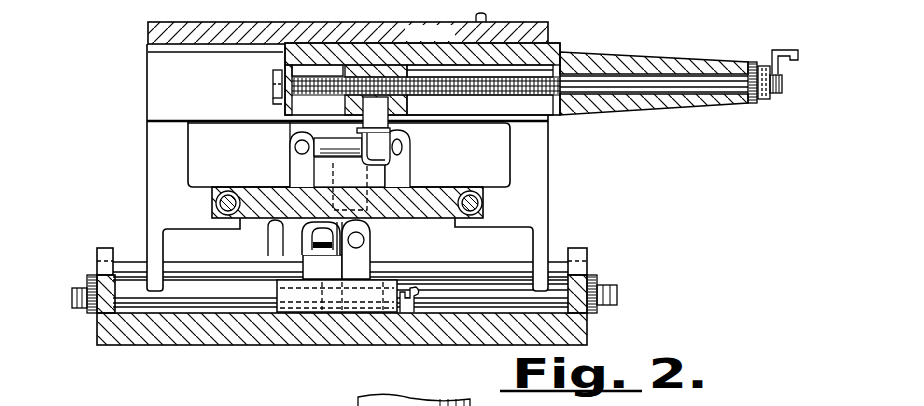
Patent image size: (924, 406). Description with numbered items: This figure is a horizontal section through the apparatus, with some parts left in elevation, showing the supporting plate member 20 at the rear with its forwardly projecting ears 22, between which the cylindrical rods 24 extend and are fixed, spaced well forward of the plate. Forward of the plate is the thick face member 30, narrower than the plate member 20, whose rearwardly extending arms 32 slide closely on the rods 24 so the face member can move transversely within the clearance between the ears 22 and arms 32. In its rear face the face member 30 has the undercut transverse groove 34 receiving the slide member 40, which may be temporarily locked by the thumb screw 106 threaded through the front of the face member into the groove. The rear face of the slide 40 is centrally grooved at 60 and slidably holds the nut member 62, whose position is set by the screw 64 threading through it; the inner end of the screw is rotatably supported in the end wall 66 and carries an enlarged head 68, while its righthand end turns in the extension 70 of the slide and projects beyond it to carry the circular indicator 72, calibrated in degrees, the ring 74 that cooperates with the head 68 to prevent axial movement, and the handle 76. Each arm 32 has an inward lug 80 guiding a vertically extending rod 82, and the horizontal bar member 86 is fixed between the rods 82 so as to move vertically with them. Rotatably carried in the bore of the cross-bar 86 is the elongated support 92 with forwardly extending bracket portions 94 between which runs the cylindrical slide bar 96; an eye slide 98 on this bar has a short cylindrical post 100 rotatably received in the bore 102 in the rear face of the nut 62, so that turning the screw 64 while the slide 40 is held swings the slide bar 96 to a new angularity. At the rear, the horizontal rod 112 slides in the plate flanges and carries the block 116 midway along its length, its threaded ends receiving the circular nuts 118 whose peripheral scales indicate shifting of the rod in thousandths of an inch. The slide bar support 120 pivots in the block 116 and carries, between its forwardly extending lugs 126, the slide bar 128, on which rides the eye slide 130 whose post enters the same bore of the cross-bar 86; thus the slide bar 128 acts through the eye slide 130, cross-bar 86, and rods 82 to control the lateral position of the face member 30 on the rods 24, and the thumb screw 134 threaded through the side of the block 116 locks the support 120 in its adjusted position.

The plate member 20 is at (190, 345).
The ear 22 is at (100, 250).
The cylindrical rod 24 is at (558, 262).
The face member 30 is at (147, 28).
The arm 32 is at (150, 152).
The transverse groove 34 is at (163, 52).
The slide member 40 is at (560, 46).
The groove 60 is at (285, 68).
The nut member 62 is at (425, 100).
The screw 64 is at (492, 97).
The end wall 66 is at (282, 104).
The enlarged head 68 is at (279, 82).
The extension 70 is at (647, 103).
The circular indicator 72 is at (758, 100).
The nut or ring 74 is at (763, 62).
The handle 76 is at (789, 50).
The lug 80 is at (198, 190).
The vertically extending rod 82 is at (228, 192).
The bar member 86 is at (272, 220).
The base or support 92 is at (362, 178).
The bracket portion 94 is at (288, 137).
The slide bar 96 is at (316, 150).
The eye slide 98 is at (392, 158).
The cylindrical post 100 is at (390, 127).
The bore 102 is at (350, 104).
The thumb screw 106 is at (474, 18).
The upper rod 112 is at (618, 293).
The block 116 is at (310, 312).
The circular nut 118 is at (90, 273).
The slide bar support 120 is at (334, 274).
The arm or lug 126 is at (371, 242).
The slide bar 128 is at (305, 248).
The eye slide 130 is at (343, 224).
The thumb screw 134 is at (413, 312).